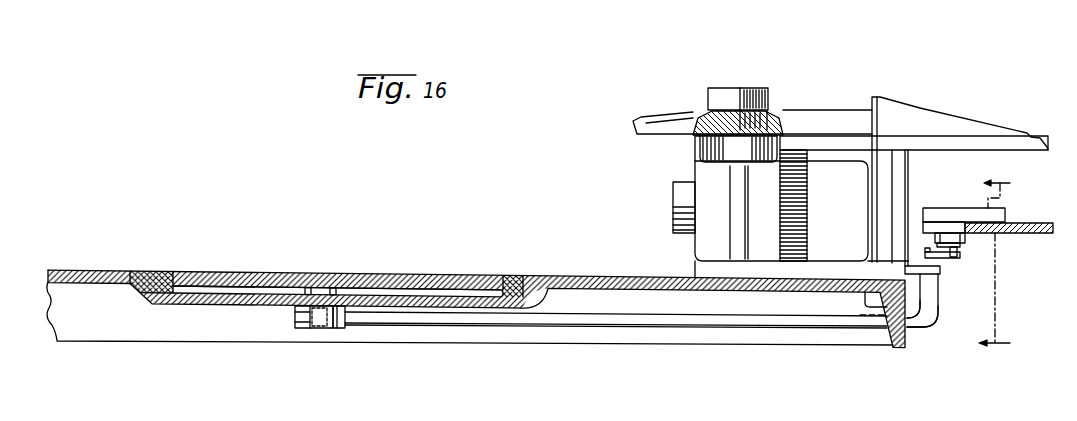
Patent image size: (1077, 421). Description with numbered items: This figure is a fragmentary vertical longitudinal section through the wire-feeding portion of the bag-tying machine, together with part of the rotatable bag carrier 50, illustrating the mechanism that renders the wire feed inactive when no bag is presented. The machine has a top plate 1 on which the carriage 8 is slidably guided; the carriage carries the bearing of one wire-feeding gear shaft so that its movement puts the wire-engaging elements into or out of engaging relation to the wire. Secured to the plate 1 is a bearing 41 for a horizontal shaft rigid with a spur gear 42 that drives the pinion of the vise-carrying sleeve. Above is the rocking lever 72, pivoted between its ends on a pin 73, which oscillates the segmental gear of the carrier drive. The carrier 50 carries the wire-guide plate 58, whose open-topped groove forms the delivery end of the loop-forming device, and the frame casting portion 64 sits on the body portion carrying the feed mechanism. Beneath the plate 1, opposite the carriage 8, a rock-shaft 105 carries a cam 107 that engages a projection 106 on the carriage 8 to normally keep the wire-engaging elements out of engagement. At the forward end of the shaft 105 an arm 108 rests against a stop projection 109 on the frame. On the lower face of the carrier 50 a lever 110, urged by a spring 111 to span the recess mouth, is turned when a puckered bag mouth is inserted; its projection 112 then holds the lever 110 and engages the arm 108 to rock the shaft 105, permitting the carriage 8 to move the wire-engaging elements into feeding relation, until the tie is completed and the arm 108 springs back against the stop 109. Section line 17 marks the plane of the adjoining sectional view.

The top plate 1 is at (96, 269).
The carriage 8 is at (169, 272).
The section line 17- 17 is at (1014, 179).
The bearing 41 is at (685, 204).
The spur gear 42 is at (806, 213).
The bag carrier 50 is at (1033, 237).
The plate 58 is at (984, 213).
The portion of member 63 64 is at (940, 115).
The rocking lever 72 is at (820, 114).
The pin 73 is at (752, 87).
The rock-shaft 105 is at (660, 315).
The projection 106 is at (323, 330).
The cam 107 is at (340, 330).
The arm 108 is at (933, 293).
The stop projection 109 is at (932, 313).
The lever 110 is at (943, 274).
The spring 111 is at (949, 245).
The projection 112 is at (926, 253).